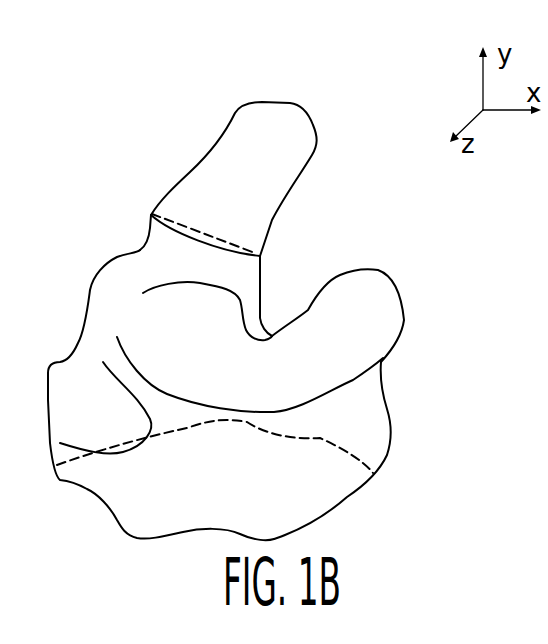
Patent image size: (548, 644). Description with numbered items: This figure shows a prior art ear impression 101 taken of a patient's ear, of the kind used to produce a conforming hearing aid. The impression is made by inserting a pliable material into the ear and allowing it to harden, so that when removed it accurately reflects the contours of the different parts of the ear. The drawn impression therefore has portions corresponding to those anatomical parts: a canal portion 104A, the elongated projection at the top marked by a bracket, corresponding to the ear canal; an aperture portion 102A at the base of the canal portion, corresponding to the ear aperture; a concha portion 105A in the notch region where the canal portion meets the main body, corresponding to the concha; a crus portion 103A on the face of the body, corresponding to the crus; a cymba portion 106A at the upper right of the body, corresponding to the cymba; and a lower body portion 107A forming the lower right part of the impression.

The ear impression 101 is at (253, 92).
The aperture portion 102A is at (237, 253).
The crus portion 103A is at (222, 394).
The canal portion 104A is at (97, 90).
The concha portion 105A is at (163, 310).
The cymba portion 106A is at (387, 298).
The lower body portion 107A is at (367, 422).